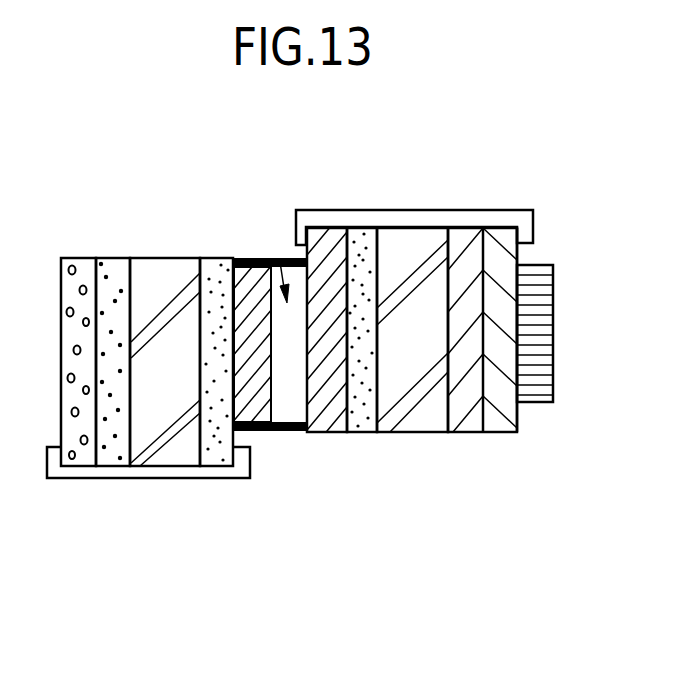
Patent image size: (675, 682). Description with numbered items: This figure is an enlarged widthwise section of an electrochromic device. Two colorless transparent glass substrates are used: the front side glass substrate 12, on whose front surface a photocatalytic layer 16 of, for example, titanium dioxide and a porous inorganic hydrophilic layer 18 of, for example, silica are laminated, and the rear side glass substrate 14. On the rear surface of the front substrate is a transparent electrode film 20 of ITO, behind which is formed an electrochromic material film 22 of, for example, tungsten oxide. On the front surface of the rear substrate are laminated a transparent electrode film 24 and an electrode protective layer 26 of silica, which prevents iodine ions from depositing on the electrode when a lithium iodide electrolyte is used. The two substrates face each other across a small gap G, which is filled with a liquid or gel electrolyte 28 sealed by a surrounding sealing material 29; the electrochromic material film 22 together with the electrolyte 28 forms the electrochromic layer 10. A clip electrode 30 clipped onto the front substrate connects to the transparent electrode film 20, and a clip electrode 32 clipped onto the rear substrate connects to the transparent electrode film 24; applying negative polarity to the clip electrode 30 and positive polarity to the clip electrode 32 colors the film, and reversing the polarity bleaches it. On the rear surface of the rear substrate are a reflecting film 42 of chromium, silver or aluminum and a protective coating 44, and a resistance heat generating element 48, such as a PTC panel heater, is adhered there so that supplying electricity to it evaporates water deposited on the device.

The electrochromic layer 10 is at (282, 366).
The front side glass substrate 12 is at (153, 265).
The rear side glass substrate 14 is at (432, 430).
The photocatalytic layer 16 is at (110, 270).
The porous inorganic hydrophilic layer 18 is at (83, 262).
The transparent electrode film 20 is at (207, 267).
The electrochromic material film 22 is at (260, 413).
The transparent electrode film 24 is at (365, 432).
The electrode protective layer 26 is at (325, 433).
The electrolyte 28 is at (290, 413).
The sealing material 29 is at (248, 260).
The clip electrode 30 is at (172, 472).
The clip electrode 32 is at (417, 218).
The reflecting film 42 is at (472, 430).
The protective coating 44 is at (517, 422).
The resistance heat generating element 48 is at (542, 263).
The gap G is at (280, 262).